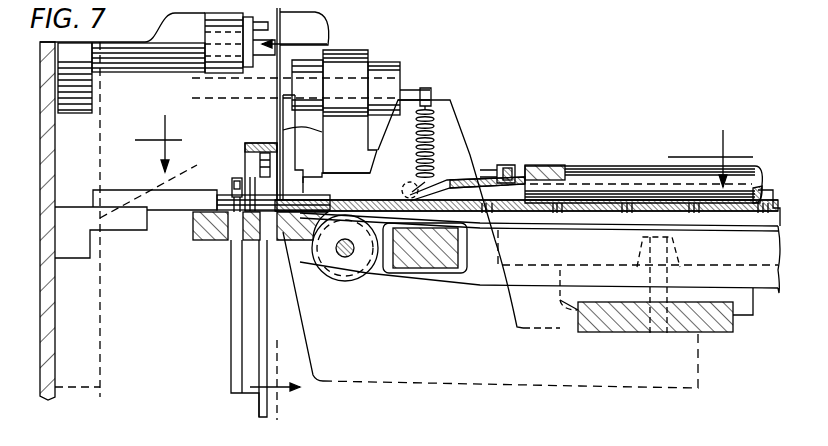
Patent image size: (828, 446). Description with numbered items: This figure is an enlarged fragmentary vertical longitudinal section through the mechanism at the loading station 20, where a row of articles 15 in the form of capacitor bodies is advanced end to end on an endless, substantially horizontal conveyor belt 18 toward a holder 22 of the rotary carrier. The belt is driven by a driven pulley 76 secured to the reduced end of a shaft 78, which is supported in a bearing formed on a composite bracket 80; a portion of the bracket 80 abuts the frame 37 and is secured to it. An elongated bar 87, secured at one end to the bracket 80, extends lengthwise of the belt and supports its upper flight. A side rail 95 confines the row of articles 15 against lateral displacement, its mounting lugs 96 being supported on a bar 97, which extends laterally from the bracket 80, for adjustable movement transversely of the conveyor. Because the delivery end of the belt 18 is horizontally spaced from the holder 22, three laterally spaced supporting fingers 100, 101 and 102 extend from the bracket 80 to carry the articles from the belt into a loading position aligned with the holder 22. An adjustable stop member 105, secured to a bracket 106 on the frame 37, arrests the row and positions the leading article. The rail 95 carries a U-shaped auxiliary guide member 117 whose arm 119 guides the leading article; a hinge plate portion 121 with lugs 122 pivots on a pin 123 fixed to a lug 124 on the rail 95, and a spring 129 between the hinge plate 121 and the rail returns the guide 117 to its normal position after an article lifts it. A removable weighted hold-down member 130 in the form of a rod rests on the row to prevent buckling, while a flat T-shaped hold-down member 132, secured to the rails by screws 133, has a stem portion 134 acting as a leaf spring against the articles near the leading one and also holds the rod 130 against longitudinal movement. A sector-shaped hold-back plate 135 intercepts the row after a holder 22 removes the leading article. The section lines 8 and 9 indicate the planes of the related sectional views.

The frame 37 is at (50, 330).
The loading station 20 is at (213, 150).
The section line 8- 8 is at (289, 214).
The section line 9- 9 is at (444, 151).
The bracket 106 is at (75, 220).
The adjustable stop member 105 is at (137, 177).
The supporting finger 102 is at (202, 233).
The supporting finger 101 is at (248, 240).
The supporting finger 100 is at (297, 217).
The holder 22 is at (228, 369).
The arm 119 is at (252, 178).
The U-shaped auxiliary guide member 117 is at (258, 137).
The hinge plate portion 121 is at (310, 127).
The hold-back plate 135 is at (277, 125).
The lug 124 is at (350, 67).
The lugs 122 is at (393, 70).
The pin 123 is at (400, 78).
The stem portion 134 is at (338, 173).
The spring 129 is at (433, 127).
The side rail 95 is at (417, 185).
The T-shaped hold-down member 132 is at (495, 165).
The screws 133 is at (507, 167).
The weighted hold-down member 130 is at (603, 177).
The articles 15 is at (713, 213).
The conveyor belt 18 is at (430, 288).
The elongated bar 87 is at (478, 288).
The driven pulley 76 is at (366, 286).
The shaft 78 is at (343, 255).
The mounting lugs 96 is at (560, 312).
The bar 97 is at (610, 330).
The composite bracket 80 is at (487, 385).